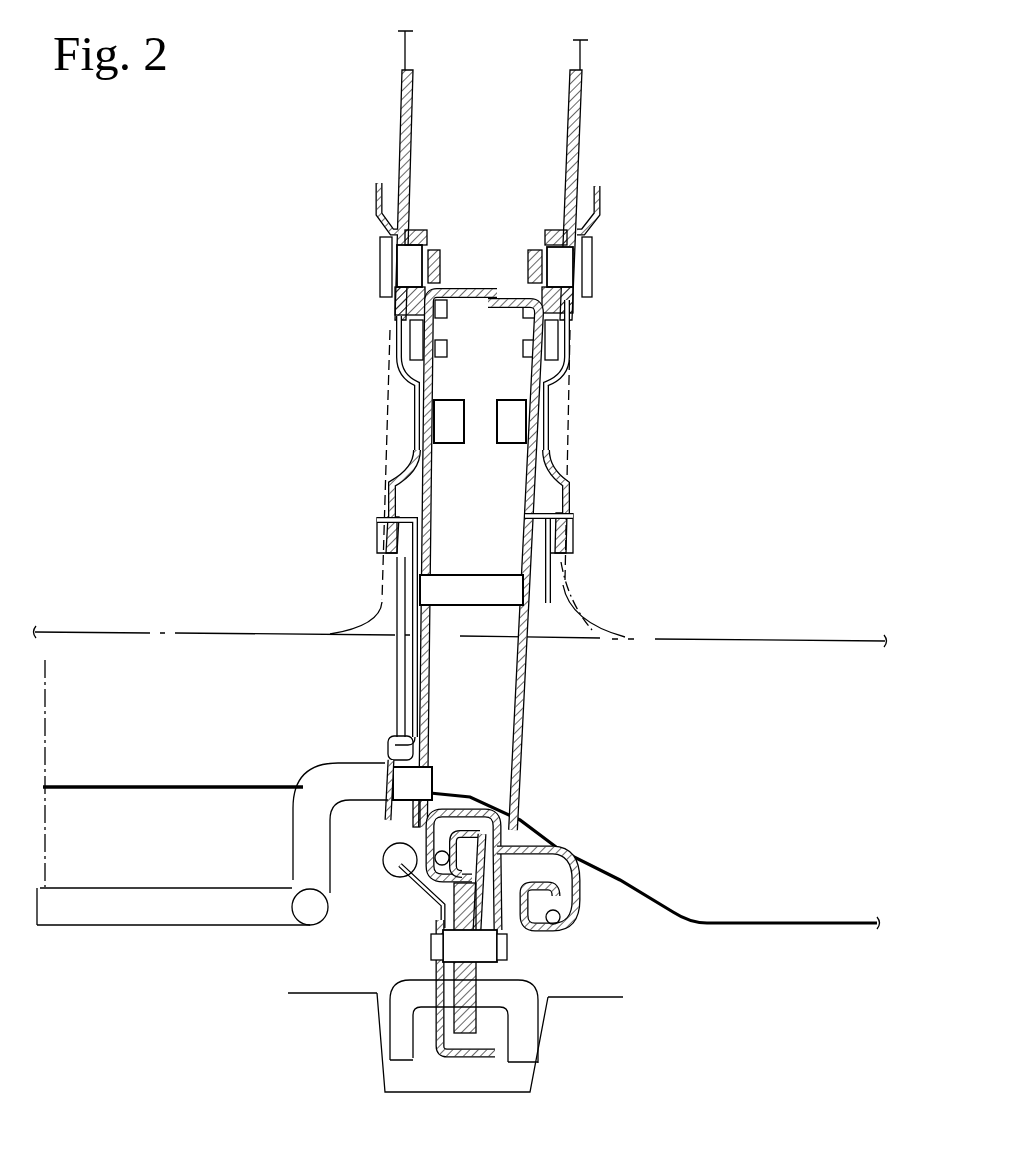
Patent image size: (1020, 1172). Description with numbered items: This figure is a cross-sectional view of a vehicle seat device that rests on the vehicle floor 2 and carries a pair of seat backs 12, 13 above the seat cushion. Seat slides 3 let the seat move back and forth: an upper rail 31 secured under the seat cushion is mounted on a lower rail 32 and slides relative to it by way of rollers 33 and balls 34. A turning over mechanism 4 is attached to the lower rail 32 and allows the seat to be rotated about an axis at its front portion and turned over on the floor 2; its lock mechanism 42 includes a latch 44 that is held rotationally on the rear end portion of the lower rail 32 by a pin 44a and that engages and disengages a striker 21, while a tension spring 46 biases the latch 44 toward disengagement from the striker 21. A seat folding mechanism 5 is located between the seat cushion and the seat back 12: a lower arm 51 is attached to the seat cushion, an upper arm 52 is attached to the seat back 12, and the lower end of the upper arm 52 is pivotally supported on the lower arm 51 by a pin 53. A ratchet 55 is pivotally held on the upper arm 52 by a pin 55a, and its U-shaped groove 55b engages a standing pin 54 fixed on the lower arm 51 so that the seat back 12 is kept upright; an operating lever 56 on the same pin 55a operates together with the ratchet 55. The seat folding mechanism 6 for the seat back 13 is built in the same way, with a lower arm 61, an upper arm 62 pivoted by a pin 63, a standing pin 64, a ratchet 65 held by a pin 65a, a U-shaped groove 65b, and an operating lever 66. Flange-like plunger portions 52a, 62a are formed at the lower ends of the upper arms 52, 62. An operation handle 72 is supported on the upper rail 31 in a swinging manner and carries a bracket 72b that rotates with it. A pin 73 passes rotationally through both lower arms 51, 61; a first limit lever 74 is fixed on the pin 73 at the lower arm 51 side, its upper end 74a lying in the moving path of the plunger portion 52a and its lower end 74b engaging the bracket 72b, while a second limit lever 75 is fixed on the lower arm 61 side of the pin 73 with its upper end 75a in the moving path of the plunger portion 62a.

The vehicle floor 2 is at (317, 997).
The seat slides 3 is at (637, 922).
The turning over mechanism 4 is at (372, 950).
The seat folding mechanism 5 is at (345, 225).
The seat folding mechanism 6 is at (645, 225).
The seat back 12 is at (402, 58).
The seat back 13 is at (588, 45).
The striker 21 is at (520, 1040).
The upper rail 31 is at (550, 850).
The lower rail 32 is at (497, 970).
The rollers 33 is at (573, 877).
The balls 34 is at (413, 877).
The lock mechanism 42 is at (427, 1063).
The latch 44 is at (462, 1002).
The pin 44a is at (453, 948).
The tension spring 46 is at (383, 848).
The lower arm 51 is at (420, 661).
The upper arm 52 is at (399, 150).
The plunger portion 52a is at (382, 545).
The pin 53 is at (418, 455).
The standing pin 54 is at (402, 362).
The ratchet 55 is at (398, 306).
The pin 55a is at (405, 268).
The U-shaped groove 55b is at (398, 332).
The operating lever 56 is at (385, 195).
The lower arm 61 is at (518, 765).
The upper arm 62 is at (575, 150).
The plunger portion 62a is at (575, 558).
The pin 63 is at (542, 452).
The standing pin 64 is at (568, 365).
The ratchet 65 is at (575, 310).
The pin 65a is at (562, 268).
The U-shaped groove 65b is at (568, 335).
The operating lever 66 is at (602, 195).
The operation handle 72 is at (283, 867).
The bracket 72b is at (388, 753).
The pin 73 is at (477, 605).
The first limit lever 74 is at (417, 689).
The upper end 74a is at (385, 522).
The lower end 74b is at (393, 737).
The second limit lever 75 is at (548, 630).
The upper end 75a is at (572, 528).